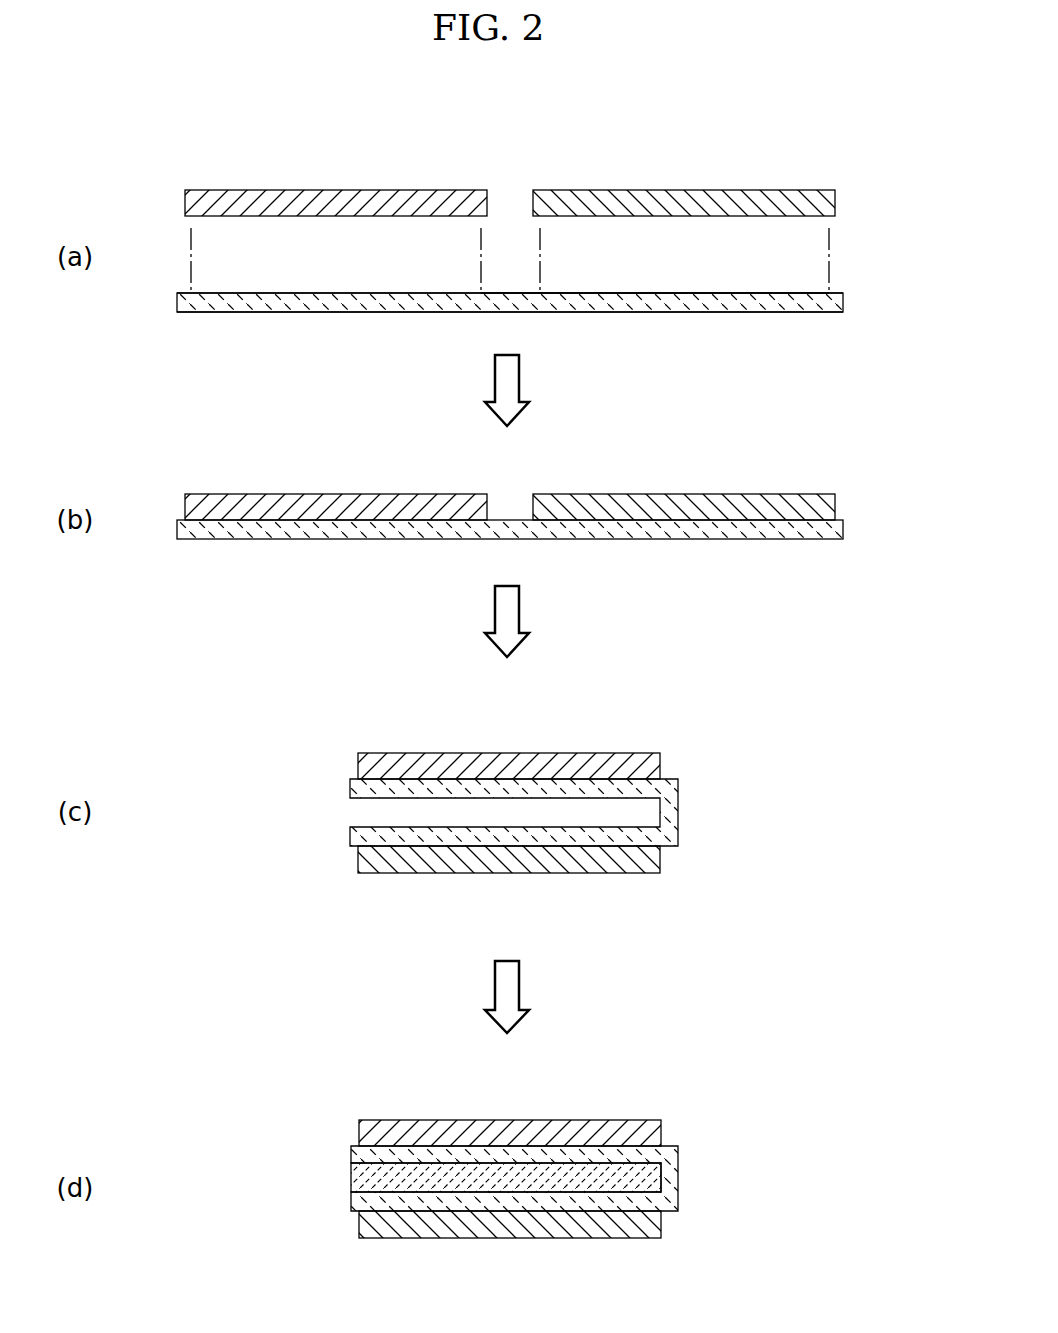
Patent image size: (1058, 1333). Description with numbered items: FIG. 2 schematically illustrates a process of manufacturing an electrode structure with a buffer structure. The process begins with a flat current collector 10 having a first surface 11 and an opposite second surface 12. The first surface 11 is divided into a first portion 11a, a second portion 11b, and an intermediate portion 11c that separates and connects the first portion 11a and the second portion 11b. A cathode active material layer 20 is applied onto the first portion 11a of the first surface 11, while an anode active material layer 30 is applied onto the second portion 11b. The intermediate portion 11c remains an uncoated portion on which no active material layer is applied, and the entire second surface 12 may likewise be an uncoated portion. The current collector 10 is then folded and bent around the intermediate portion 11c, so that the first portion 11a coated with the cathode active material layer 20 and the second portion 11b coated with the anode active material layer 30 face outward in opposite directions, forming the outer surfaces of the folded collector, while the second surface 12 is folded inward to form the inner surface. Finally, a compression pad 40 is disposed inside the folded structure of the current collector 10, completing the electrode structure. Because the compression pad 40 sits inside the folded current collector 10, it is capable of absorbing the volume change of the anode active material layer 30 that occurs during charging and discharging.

The current collector 10 is at (843, 303).
The first surface 11 is at (763, 293).
The first portion 11a is at (336, 259).
The second portion 11b is at (684, 260).
The intermediate portion 11c is at (510, 260).
The second surface 12 is at (763, 312).
The cathode active material layer 20 is at (335, 190).
The anode active material layer 30 is at (668, 190).
The compression pad 40 is at (351, 1178).